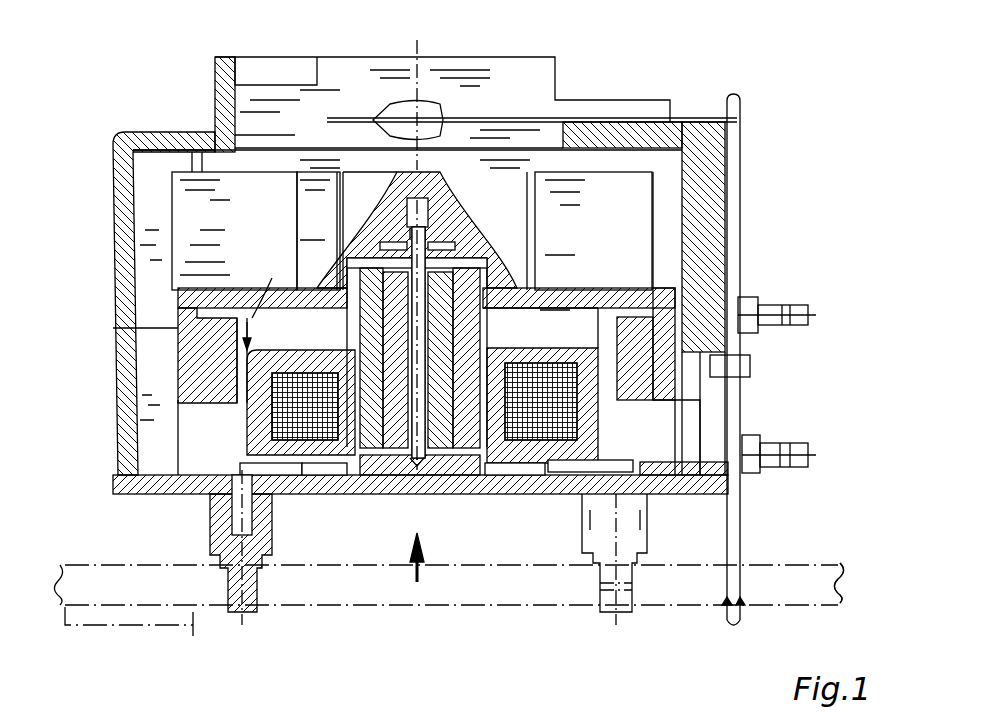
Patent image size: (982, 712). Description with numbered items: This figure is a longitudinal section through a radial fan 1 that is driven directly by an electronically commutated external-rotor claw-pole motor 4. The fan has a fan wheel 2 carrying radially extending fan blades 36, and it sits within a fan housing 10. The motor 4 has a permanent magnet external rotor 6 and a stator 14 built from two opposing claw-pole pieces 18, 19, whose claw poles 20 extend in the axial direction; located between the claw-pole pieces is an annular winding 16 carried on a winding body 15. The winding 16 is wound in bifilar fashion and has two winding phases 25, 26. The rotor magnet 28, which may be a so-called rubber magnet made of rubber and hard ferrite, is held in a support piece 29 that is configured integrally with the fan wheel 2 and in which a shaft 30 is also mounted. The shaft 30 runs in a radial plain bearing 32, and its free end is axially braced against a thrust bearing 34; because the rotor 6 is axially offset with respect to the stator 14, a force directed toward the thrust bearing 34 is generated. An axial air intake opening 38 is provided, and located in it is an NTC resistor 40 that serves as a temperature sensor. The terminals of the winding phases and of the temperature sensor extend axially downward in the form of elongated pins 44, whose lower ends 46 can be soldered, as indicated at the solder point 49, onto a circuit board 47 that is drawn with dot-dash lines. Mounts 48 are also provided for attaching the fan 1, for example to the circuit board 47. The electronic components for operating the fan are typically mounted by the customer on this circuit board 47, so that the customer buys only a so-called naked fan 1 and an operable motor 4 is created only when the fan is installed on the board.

The radial fan 1 is at (105, 506).
The fan wheel 2 is at (168, 196).
The electronically commutated external-rotor claw-pole motor 4 is at (188, 416).
The permanent magnet external rotor 6 is at (668, 380).
The fan housing 10 is at (128, 227).
The stator 14 is at (592, 344).
The winding body 15 is at (300, 350).
The annular winding 16 is at (582, 432).
The claw-pole piece 18 is at (522, 344).
The claw-pole piece 19 is at (345, 462).
The claw poles 20 is at (250, 420).
The winding phase 25 is at (436, 501).
The winding phase 26 is at (303, 485).
The rotor magnet 28 is at (205, 385).
The support piece 29 is at (200, 340).
The shaft 30 is at (452, 212).
The radial plain bearing 32 is at (530, 287).
The thrust bearing 34 is at (428, 494).
The fan blades 36 is at (278, 223).
The axial air intake opening 38 is at (352, 78).
The NTC resistor 40 is at (432, 113).
The elongated pins 44 is at (750, 510).
The lower ends of pins 46 is at (742, 624).
The circuit board 47 is at (832, 607).
The mounts 48 is at (800, 330).
The solder joint 49 is at (727, 606).